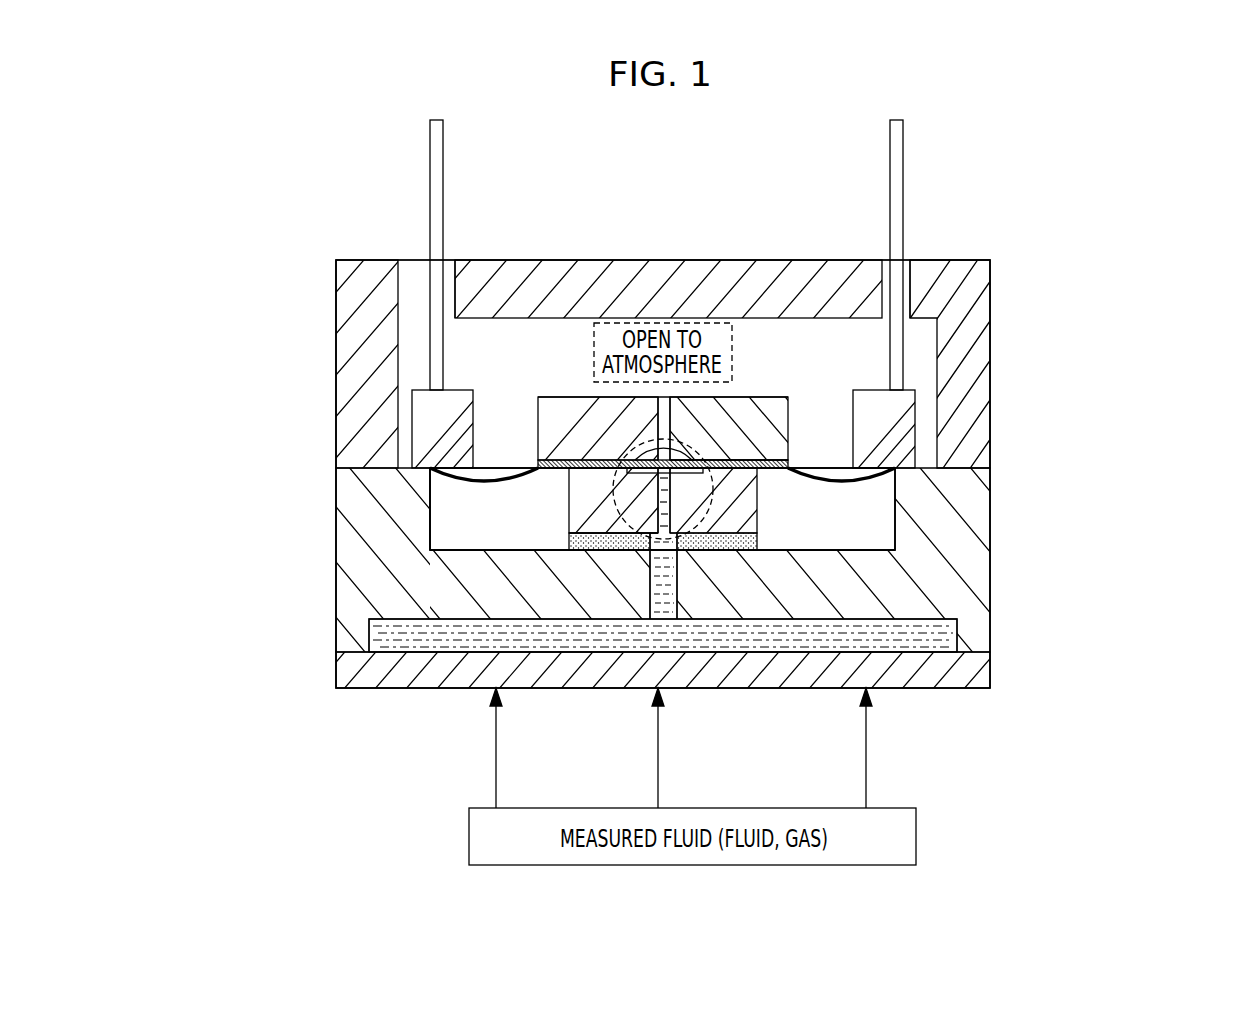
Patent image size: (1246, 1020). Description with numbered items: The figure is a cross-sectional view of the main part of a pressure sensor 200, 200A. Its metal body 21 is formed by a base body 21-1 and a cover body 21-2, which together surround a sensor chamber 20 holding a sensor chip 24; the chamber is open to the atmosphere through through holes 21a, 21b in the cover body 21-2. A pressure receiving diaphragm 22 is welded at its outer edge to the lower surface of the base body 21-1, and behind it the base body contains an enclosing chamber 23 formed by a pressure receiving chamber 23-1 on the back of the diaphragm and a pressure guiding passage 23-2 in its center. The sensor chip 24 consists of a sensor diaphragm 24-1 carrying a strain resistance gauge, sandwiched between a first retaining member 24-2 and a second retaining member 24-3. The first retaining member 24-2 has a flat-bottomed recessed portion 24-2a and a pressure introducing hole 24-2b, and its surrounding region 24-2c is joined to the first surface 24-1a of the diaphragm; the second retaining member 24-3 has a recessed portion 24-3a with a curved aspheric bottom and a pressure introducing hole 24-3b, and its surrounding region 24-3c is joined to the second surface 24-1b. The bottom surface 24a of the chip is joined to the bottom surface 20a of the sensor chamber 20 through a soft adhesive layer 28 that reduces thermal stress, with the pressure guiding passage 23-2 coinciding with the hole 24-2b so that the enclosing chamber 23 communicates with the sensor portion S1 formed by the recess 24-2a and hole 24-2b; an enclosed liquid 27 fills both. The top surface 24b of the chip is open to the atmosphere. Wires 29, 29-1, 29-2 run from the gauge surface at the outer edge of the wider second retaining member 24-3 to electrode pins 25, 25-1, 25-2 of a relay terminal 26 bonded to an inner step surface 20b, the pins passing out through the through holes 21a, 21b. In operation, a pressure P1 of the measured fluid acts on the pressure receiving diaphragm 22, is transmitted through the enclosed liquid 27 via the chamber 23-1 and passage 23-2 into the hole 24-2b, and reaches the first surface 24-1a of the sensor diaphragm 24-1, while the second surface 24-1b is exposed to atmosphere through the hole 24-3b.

The pressure sensor 200 is at (1003, 236).
The pressure sensor 200A is at (1136, 192).
The body 21 is at (170, 368).
The base body 21-1 is at (353, 547).
The cover body 21-2 is at (355, 371).
The through hole 21a is at (413, 268).
The through hole 21b is at (935, 268).
The sensor chamber 20 is at (893, 552).
The bottom surface of the sensor chamber 20a is at (437, 548).
The inner step surface 20b is at (410, 462).
The pressure receiving diaphragm 22 is at (371, 676).
The enclosed liquid 27 is at (392, 633).
The enclosing chamber 23 is at (552, 722).
The pressure receiving chamber 23-1 is at (667, 633).
The pressure guiding passage 23-2 is at (662, 583).
The sensor chip 24 is at (1176, 410).
The sensor diaphragm 24-1 is at (833, 380).
The first surface 24-1a is at (616, 478).
The second surface 24-1b is at (614, 472).
The first retaining member 24-2 is at (813, 540).
The recessed portion 24-2a is at (683, 480).
The pressure introducing hole 24-2b is at (676, 505).
The surrounding region 24-2c is at (730, 458).
The second retaining member 24-3 is at (818, 327).
The recessed portion 24-3a is at (692, 455).
The pressure introducing hole 24-3b is at (655, 432).
The surrounding region 24-3c is at (556, 427).
The bottom surface of the sensor chip 24a is at (613, 517).
The top surface of the sensor chip 24b is at (778, 395).
The electrode pins 25 is at (675, 242).
The electrode pin 25-1 is at (437, 140).
The electrode pin 25-2 is at (895, 131).
The relay terminal 26 is at (423, 400).
The adhesive layer 28 is at (570, 547).
The wires 29 is at (675, 491).
The wire 29-1 is at (480, 480).
The wire 29-2 is at (845, 480).
The sensor portion S1 is at (620, 447).
The pressure P1 is at (672, 748).